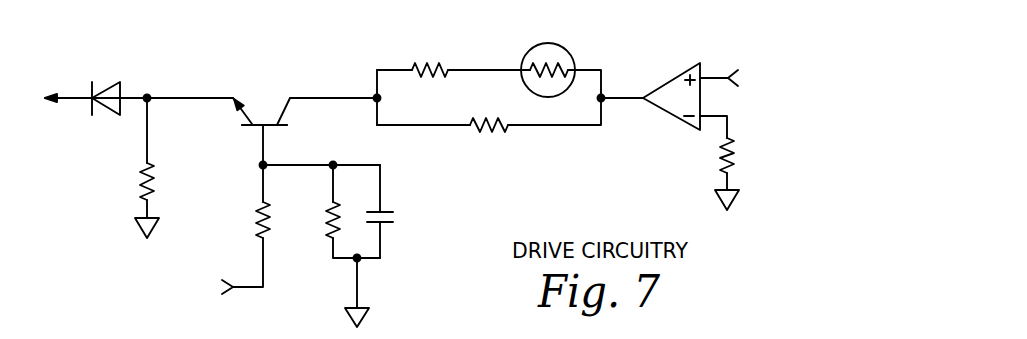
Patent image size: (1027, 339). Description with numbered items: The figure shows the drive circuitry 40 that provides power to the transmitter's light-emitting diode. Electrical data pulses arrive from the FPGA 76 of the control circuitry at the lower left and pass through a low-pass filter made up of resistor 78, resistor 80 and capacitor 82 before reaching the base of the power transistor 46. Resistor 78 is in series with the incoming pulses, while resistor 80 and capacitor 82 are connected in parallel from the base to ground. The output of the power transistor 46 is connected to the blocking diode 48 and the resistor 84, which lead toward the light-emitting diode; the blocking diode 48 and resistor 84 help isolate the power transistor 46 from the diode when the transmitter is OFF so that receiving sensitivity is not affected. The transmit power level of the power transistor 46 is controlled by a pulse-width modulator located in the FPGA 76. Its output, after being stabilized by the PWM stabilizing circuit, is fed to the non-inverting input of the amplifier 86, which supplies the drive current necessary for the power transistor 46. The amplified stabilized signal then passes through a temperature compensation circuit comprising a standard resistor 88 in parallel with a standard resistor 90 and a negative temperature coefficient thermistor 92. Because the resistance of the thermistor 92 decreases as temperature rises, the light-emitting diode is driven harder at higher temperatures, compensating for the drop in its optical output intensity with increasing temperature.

The drive circuitry 40 is at (313, 56).
The power transistor 46 is at (229, 140).
The blocking diode 48 is at (108, 88).
The FPGA (field programmable gate array) 76 is at (153, 301).
The resistor 78 is at (253, 222).
The resistor 80 is at (326, 220).
The capacitor 82 is at (393, 217).
The resistor 84 is at (138, 180).
The amplifier 86 is at (668, 113).
The standard resistor 88 is at (497, 132).
The standard resistor 90 is at (438, 62).
The negative temperature coefficient thermistor (NTC) 92 is at (550, 68).